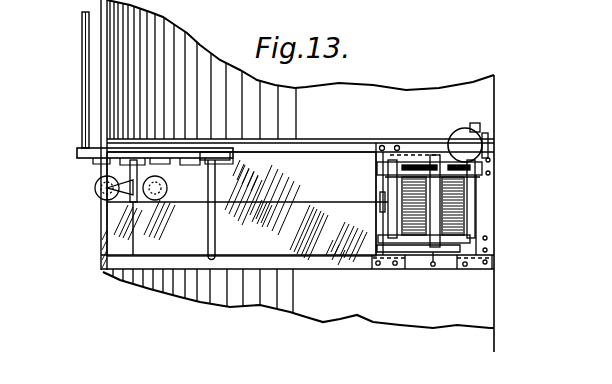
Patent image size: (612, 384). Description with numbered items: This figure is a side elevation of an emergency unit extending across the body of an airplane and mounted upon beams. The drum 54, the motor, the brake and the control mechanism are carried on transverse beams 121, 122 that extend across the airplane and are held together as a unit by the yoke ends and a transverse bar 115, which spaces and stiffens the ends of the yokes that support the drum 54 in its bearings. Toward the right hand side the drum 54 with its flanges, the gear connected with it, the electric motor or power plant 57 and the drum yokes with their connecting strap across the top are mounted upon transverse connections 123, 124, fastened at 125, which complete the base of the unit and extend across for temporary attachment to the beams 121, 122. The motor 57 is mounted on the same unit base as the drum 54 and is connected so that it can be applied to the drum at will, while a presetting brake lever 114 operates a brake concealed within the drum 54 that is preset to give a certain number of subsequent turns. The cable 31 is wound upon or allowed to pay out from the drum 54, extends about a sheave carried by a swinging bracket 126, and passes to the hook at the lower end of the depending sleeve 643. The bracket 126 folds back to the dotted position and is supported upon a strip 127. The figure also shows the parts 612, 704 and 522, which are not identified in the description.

The depending sleeve 643 is at (82, 90).
The swinging bracket 126 is at (103, 228).
The transverse beam 121 is at (338, 147).
The bracket bar 612 is at (167, 165).
The linkage with rollers 704 is at (118, 190).
The vertical rod 522 is at (208, 218).
The cable 31 is at (315, 203).
The transverse beam 122 is at (313, 265).
The strip 127 is at (107, 272).
The transverse connection 123 is at (357, 270).
The fastening 125 is at (397, 147).
The presetting brake lever 114 is at (433, 270).
The drum 54 is at (450, 222).
The transverse bar 115 is at (463, 203).
The transverse connection 124 is at (490, 187).
The electric motor 57 is at (466, 144).